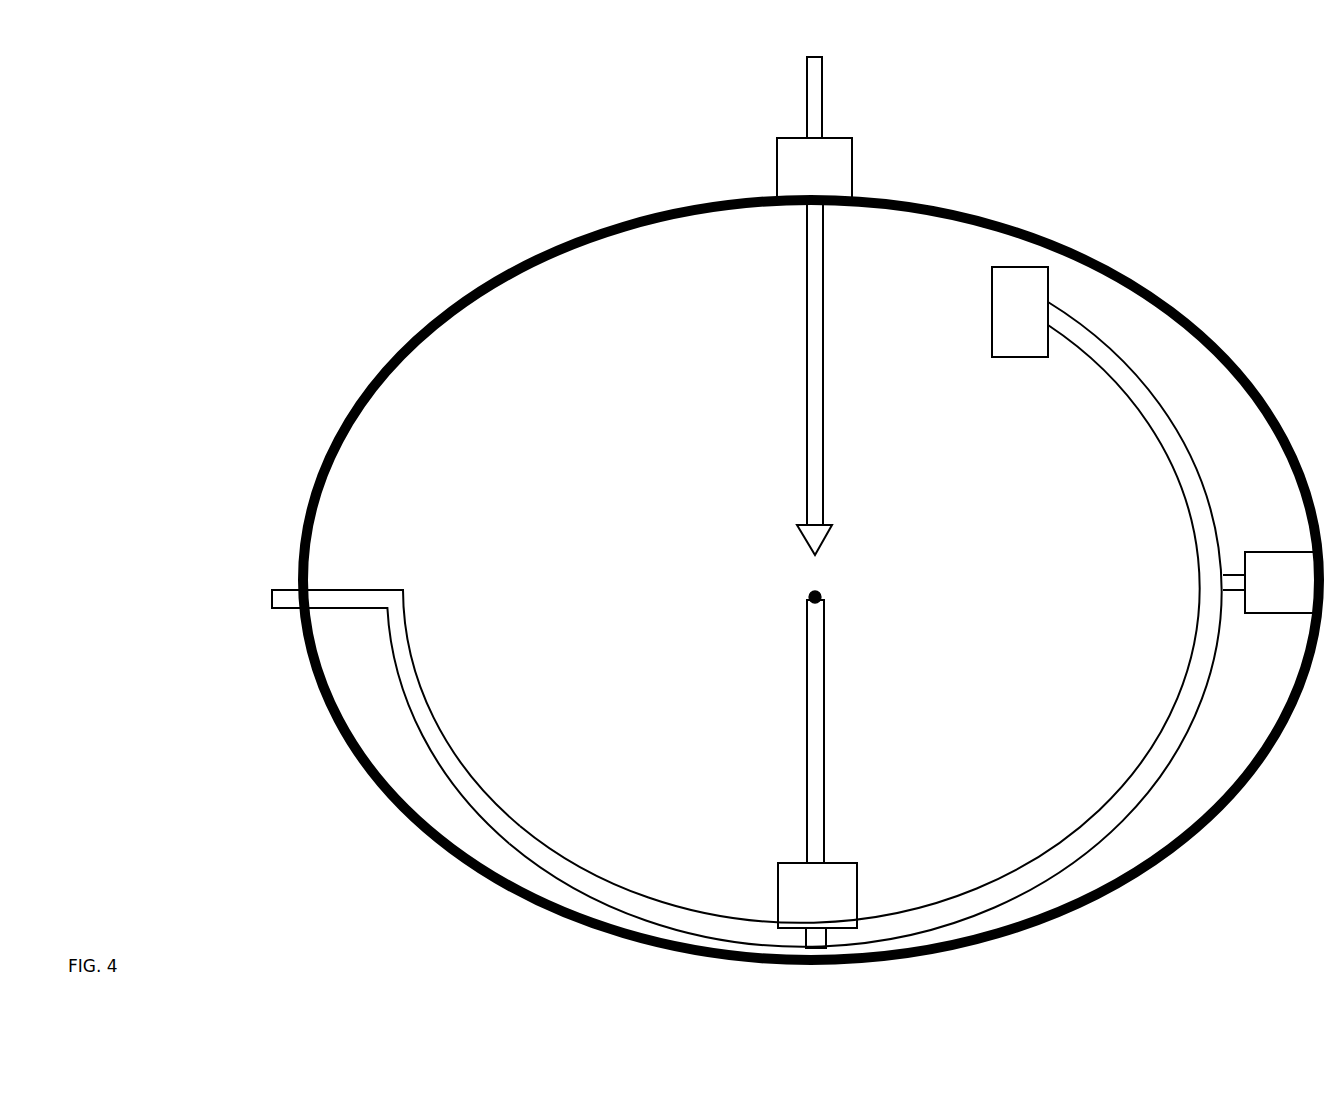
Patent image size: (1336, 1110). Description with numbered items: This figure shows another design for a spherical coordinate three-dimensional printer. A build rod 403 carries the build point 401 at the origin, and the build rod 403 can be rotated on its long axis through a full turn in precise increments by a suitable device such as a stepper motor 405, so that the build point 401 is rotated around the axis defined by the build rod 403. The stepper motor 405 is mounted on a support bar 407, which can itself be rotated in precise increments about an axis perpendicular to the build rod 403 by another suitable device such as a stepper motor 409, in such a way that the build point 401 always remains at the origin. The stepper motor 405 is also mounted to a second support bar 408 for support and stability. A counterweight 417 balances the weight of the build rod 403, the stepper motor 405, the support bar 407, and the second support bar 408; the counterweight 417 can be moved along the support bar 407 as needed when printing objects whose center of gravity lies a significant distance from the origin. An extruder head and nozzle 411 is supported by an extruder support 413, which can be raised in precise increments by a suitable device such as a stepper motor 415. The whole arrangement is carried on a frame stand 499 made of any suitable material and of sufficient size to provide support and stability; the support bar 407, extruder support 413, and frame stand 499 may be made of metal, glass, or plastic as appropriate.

The frame stand 499 is at (811, 580).
The extruder support 413 is at (795, 291).
The stepper motor 415 is at (797, 168).
The extruder head and nozzle 411 is at (798, 540).
The build point 401 is at (794, 592).
The build rod 403 is at (800, 774).
The stepper motor 405 is at (801, 895).
The counterweight 417 is at (1000, 312).
The support bar 407 is at (865, 624).
The second support bar 408 is at (412, 717).
The stepper motor 409 is at (1270, 572).